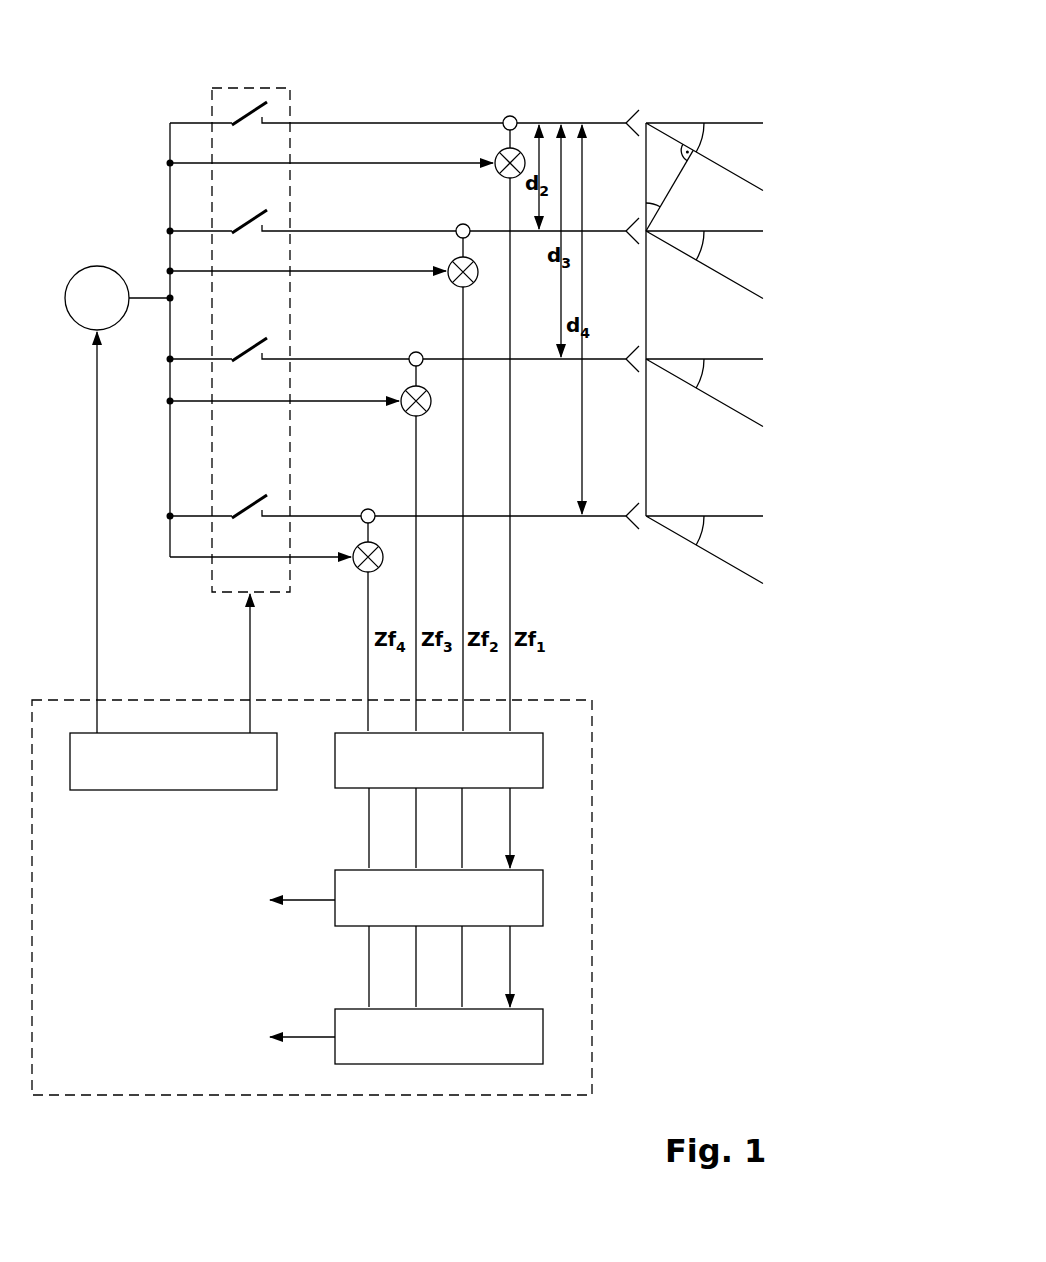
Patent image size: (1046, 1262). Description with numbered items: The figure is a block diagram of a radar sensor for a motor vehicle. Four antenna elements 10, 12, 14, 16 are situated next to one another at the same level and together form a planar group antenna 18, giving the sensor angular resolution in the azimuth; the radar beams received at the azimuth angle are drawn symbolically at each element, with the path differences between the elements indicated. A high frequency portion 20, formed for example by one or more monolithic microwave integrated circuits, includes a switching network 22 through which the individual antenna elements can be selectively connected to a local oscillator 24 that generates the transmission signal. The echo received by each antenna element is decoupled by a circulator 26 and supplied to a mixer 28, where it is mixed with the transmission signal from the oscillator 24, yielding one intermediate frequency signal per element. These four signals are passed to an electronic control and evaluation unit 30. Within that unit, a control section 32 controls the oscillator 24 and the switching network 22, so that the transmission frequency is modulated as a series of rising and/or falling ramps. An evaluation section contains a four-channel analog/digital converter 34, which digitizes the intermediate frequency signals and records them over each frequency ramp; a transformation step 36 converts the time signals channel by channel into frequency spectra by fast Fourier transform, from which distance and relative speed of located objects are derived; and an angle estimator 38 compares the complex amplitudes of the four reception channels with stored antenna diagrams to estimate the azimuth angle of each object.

The antenna element 10 is at (630, 113).
The antenna element 12 is at (632, 222).
The antenna element 14 is at (632, 350).
The antenna element 16 is at (634, 507).
The planar group antenna 18 is at (677, 301).
The high frequency portion 20 is at (404, 102).
The switching network 22 is at (251, 88).
The local oscillator 24 is at (97, 266).
The circulator 26 is at (510, 115).
The mixer 28 is at (497, 176).
The control and evaluation unit 30 is at (52, 700).
The control section 32 is at (172, 790).
The analog/digital converter 34 is at (335, 790).
The transformation step 36 is at (335, 926).
The angle estimator 38 is at (335, 1009).